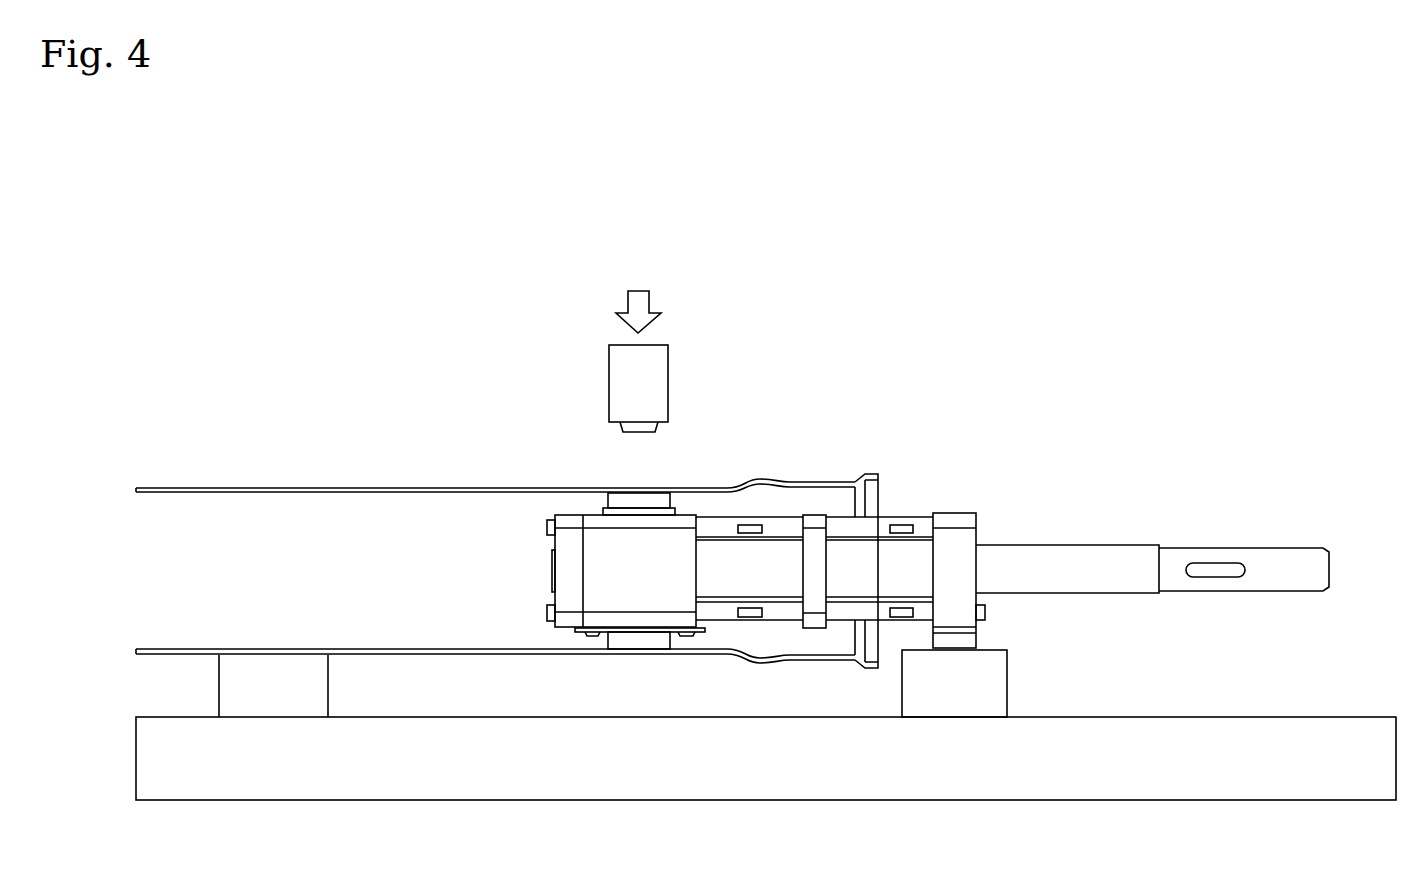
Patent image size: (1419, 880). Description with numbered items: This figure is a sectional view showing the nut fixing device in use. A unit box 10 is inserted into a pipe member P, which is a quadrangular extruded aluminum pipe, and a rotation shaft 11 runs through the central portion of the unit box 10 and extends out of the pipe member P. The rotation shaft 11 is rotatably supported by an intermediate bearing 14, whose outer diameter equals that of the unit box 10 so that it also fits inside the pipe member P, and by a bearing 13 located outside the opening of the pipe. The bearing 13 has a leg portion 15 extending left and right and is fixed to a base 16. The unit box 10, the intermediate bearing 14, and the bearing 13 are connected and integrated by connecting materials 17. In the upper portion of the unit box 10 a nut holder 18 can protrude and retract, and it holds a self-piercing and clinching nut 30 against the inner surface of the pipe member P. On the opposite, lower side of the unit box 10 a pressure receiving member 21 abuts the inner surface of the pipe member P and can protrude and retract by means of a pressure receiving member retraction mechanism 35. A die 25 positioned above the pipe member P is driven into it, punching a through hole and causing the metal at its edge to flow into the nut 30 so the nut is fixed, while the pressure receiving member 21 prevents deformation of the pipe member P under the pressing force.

The pipe member P is at (254, 489).
The unit box 10 is at (592, 542).
The self-piercing and clinching nut 30 is at (622, 500).
The die 25 is at (662, 352).
The nut holder 18 is at (716, 490).
The connecting materials 17 is at (778, 530).
The intermediate bearing 14 is at (813, 520).
The bearing 13 is at (955, 520).
The rotation shaft 11 is at (1070, 550).
The leg portion 15 is at (970, 642).
The base 16 is at (1300, 735).
The pressure receiving member retraction mechanism 35 is at (579, 632).
The pressure receiving member 21 is at (640, 643).